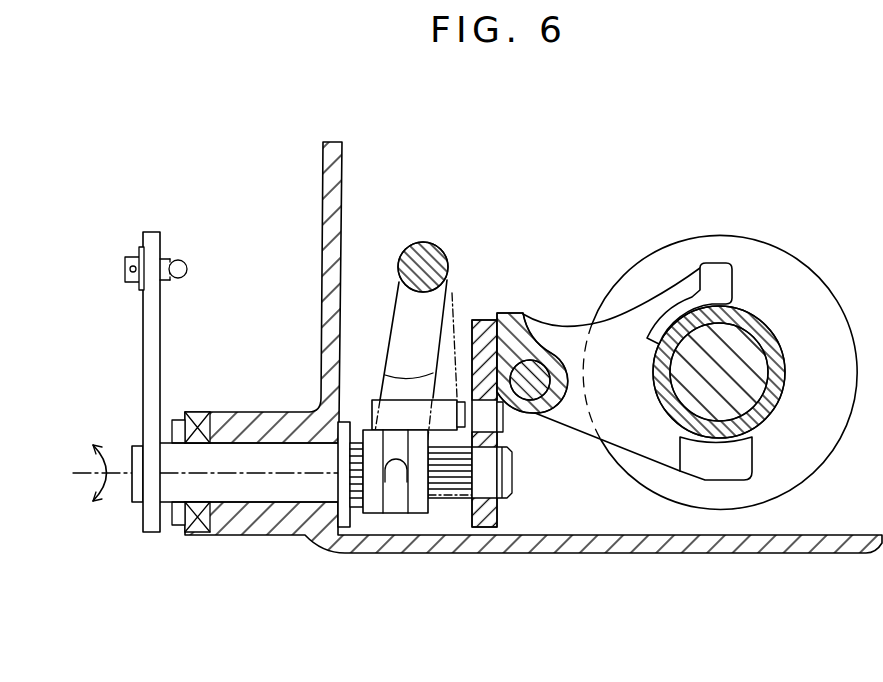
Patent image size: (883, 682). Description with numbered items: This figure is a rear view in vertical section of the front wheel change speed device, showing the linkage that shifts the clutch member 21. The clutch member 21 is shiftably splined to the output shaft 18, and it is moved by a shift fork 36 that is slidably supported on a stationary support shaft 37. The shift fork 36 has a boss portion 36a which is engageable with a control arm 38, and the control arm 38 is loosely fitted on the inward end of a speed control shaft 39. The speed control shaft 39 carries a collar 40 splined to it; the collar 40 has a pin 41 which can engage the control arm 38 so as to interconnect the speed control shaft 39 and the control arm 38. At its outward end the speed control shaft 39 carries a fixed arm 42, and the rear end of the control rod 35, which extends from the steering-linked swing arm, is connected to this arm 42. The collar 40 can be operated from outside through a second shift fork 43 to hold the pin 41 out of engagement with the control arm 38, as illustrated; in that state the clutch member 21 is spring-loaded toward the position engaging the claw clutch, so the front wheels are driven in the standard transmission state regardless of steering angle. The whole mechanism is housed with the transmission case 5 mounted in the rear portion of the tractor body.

The transmission case 5 is at (803, 548).
The output shaft 18 is at (745, 347).
The clutch member 21 is at (716, 238).
The control rod 35 is at (185, 263).
The shift fork 36 is at (710, 468).
The boss portion 36a is at (530, 318).
The stationary support shaft 37 is at (543, 394).
The control arm 38 is at (485, 328).
The speed control shaft 39 is at (260, 483).
The collar 40 is at (417, 513).
The pin 41 is at (422, 400).
The arm 42 is at (145, 345).
The shift fork 43 is at (400, 308).